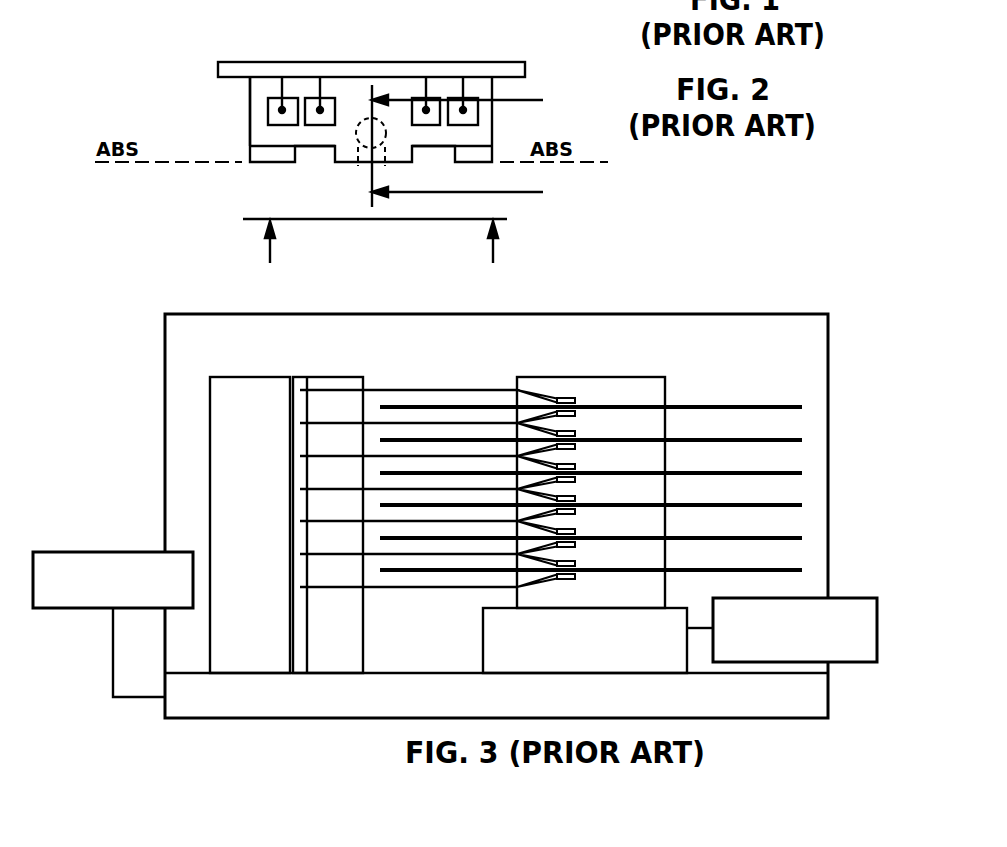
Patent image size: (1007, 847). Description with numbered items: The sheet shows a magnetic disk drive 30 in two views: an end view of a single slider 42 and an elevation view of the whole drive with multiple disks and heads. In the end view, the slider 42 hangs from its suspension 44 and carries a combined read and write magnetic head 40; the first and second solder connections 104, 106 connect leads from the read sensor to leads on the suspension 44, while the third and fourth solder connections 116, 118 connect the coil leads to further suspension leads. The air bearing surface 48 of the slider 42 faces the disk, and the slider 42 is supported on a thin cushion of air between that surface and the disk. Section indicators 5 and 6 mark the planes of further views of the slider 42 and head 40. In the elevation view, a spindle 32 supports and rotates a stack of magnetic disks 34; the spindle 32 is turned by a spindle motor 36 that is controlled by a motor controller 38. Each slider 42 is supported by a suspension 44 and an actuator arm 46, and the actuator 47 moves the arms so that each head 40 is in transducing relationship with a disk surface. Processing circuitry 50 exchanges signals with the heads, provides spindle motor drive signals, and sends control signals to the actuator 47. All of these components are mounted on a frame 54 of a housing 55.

In FIG. 2, the section line 5- 5 is at (382, 260).
In FIG. 2, the section line 6- 6 is at (469, 148).
In FIG. 3, the magnetic disk drive 30 is at (700, 368).
In FIG. 3, the spindle 32 is at (641, 377).
In FIG. 3, the magnetic disk 34 is at (782, 409).
In FIG. 3, the spindle motor 36 is at (606, 660).
In FIG. 3, the motor controller 38 is at (865, 663).
In FIG. 2, the magnetic head 40 is at (354, 170).
In FIG. 2, the slider 42 is at (250, 108).
In FIG. 3, the slider 42 is at (572, 420).
In FIG. 3, the suspension 44 is at (556, 423).
In FIG. 3, the actuator arm 46 is at (468, 422).
In FIG. 3, the actuator 47 is at (243, 377).
In FIG. 2, the air bearing surface 48 is at (143, 164).
In FIG. 3, the processing circuitry 50 is at (107, 552).
In FIG. 3, the frame 54 is at (285, 720).
In FIG. 3, the housing 55 is at (677, 314).
In FIG. 2, the first solder connection 104 is at (268, 100).
In FIG. 2, the second solder connection 106 is at (448, 100).
In FIG. 2, the third solder connection 116 is at (302, 100).
In FIG. 2, the fourth solder connection 118 is at (412, 100).